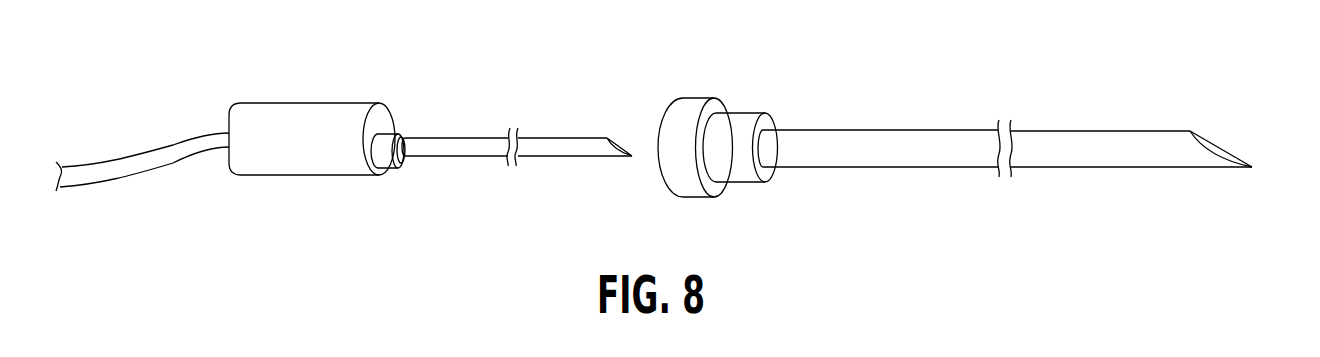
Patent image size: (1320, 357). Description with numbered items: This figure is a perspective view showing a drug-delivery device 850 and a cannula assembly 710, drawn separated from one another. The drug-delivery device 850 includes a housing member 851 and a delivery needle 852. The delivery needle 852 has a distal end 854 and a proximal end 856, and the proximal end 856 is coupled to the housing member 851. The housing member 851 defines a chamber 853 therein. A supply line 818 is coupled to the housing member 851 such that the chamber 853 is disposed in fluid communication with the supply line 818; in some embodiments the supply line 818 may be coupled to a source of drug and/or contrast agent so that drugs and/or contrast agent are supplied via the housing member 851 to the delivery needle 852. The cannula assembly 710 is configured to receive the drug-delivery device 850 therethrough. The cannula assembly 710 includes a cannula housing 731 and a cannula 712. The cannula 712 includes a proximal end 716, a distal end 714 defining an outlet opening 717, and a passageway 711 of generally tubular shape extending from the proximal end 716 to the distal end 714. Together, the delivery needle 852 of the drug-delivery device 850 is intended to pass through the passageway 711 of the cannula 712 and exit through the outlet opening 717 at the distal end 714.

The drug-delivery device 850 is at (415, 54).
The supply line 818 is at (148, 156).
The housing member 851 is at (313, 167).
The chamber 853 is at (292, 124).
The proximal end 856 is at (415, 152).
The delivery needle 852 is at (493, 136).
The distal end 854 is at (598, 150).
The cannula assembly 710 is at (950, 56).
The cannula housing 731 is at (748, 69).
The proximal end 716 is at (787, 138).
The cannula 712 is at (973, 140).
The passageway 711 is at (1053, 145).
The distal end 714 is at (1183, 140).
The outlet opening 717 is at (1242, 143).